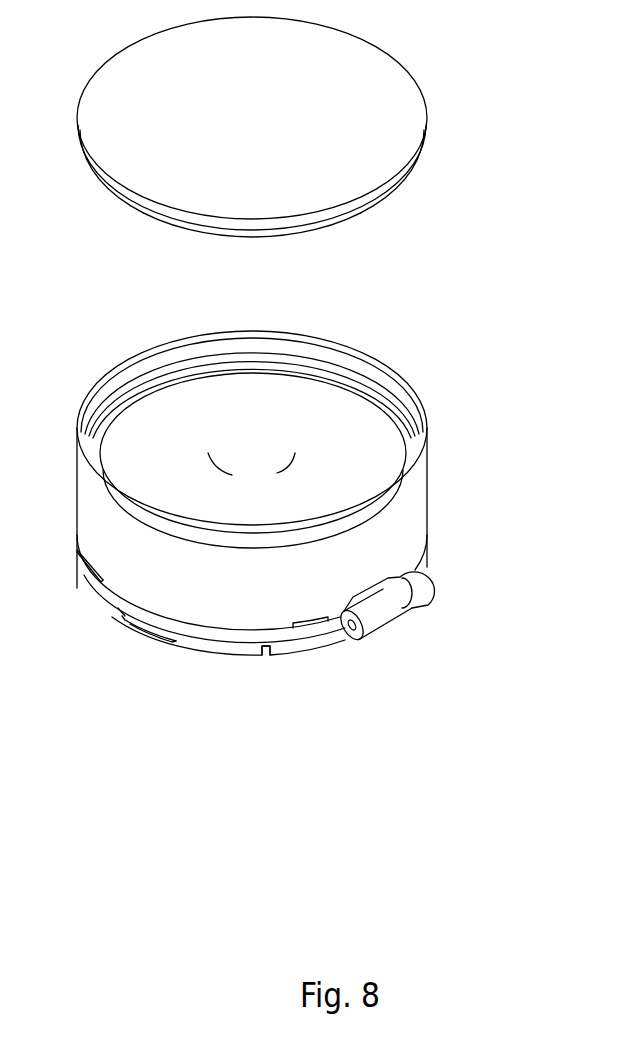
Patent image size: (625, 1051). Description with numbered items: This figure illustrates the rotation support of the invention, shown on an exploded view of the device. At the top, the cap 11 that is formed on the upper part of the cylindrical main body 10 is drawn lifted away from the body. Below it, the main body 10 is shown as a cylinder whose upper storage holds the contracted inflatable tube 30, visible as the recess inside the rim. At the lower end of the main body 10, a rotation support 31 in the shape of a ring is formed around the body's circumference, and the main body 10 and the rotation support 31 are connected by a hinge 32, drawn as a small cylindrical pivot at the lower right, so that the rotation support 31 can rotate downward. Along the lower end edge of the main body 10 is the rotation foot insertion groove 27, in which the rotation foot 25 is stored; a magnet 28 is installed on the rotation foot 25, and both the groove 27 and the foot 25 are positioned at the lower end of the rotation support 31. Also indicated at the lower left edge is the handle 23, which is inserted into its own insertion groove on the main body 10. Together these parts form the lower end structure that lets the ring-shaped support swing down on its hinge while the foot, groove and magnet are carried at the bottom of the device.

The main body 10 is at (420, 521).
The cap 11 is at (378, 78).
The handle 23 is at (93, 577).
The rotation foot 25 is at (225, 648).
The rotation foot insertion groove 27 is at (122, 615).
The magnet 28 is at (153, 635).
The inflatable tube 30 is at (137, 437).
The rotation support 31 is at (302, 640).
The hinge 32 is at (400, 602).